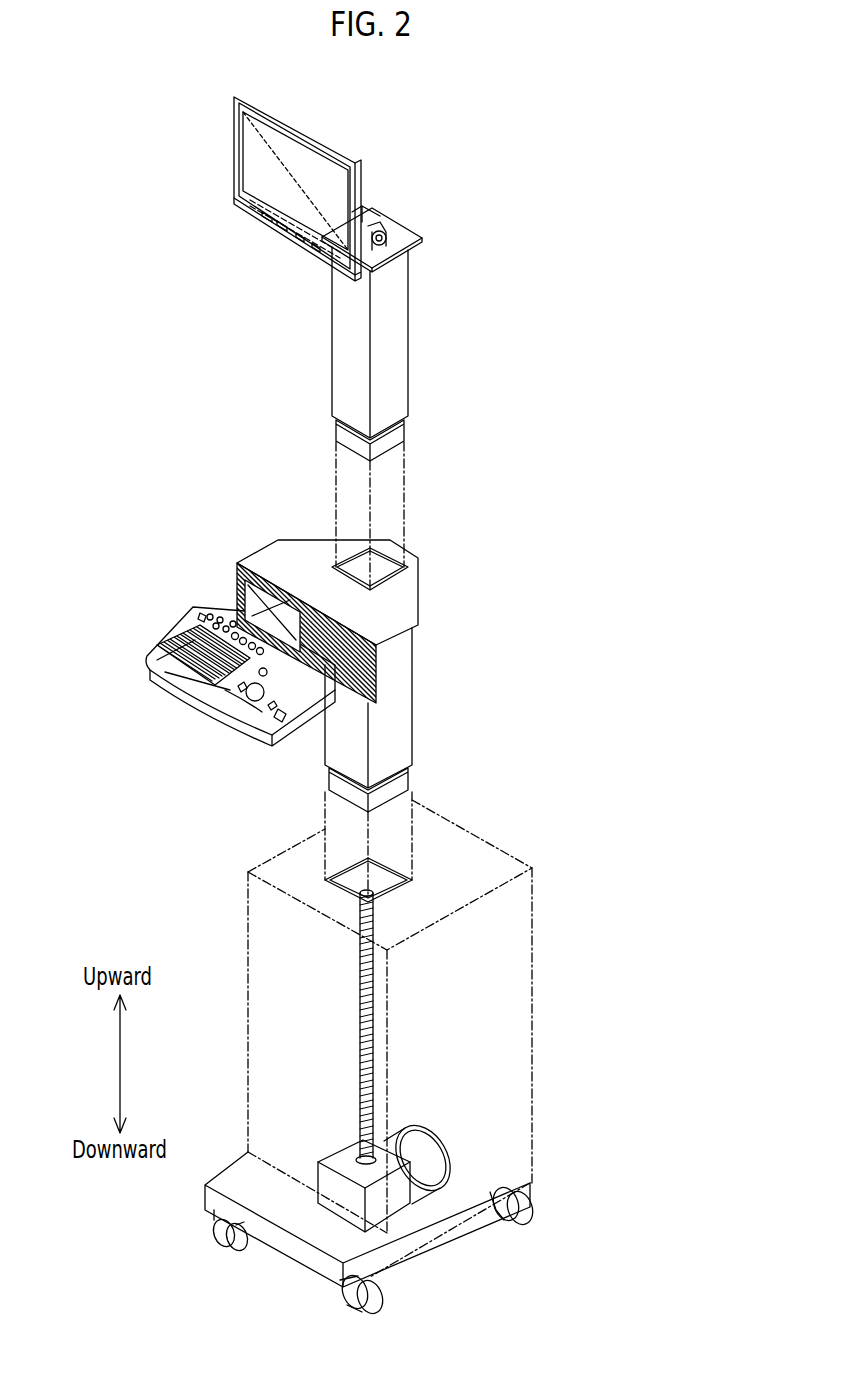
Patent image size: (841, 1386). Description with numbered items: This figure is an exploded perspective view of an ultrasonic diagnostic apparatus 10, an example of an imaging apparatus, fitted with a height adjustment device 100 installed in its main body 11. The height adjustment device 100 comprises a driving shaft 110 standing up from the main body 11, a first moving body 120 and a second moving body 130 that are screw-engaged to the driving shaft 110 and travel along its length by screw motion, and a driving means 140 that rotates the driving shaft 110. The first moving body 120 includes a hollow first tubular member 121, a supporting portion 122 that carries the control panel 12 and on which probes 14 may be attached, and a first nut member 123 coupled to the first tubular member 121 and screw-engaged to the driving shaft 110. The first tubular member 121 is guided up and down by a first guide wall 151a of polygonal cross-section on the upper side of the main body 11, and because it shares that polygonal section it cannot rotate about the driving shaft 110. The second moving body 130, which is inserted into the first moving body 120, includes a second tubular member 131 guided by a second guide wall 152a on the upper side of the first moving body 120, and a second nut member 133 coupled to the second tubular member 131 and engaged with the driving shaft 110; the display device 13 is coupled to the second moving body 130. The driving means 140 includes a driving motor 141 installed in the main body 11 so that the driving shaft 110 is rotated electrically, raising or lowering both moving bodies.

The ultrasonic diagnostic apparatus 10 is at (572, 158).
The main body 11 is at (519, 857).
The control panel 12 is at (170, 620).
The display device 13 is at (248, 162).
The probes 14 is at (312, 597).
The height adjustment device 100 is at (615, 333).
The driving shaft 110 is at (375, 1017).
The first moving body 120 is at (468, 622).
The first tubular member 121 is at (404, 712).
The supporting portion 122 is at (368, 680).
The first nut member 123 is at (410, 777).
The second moving body 130 is at (436, 337).
The second tubular member 131 is at (338, 337).
The second nut member 133 is at (340, 430).
The driving means 140 is at (468, 1126).
The driving motor 141 is at (428, 1172).
The first guide wall 151a is at (356, 876).
The second guide wall 152a is at (390, 561).